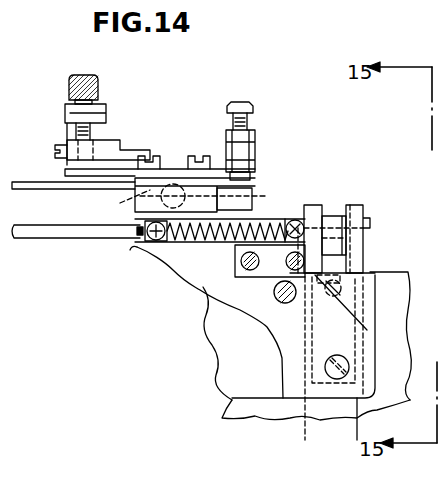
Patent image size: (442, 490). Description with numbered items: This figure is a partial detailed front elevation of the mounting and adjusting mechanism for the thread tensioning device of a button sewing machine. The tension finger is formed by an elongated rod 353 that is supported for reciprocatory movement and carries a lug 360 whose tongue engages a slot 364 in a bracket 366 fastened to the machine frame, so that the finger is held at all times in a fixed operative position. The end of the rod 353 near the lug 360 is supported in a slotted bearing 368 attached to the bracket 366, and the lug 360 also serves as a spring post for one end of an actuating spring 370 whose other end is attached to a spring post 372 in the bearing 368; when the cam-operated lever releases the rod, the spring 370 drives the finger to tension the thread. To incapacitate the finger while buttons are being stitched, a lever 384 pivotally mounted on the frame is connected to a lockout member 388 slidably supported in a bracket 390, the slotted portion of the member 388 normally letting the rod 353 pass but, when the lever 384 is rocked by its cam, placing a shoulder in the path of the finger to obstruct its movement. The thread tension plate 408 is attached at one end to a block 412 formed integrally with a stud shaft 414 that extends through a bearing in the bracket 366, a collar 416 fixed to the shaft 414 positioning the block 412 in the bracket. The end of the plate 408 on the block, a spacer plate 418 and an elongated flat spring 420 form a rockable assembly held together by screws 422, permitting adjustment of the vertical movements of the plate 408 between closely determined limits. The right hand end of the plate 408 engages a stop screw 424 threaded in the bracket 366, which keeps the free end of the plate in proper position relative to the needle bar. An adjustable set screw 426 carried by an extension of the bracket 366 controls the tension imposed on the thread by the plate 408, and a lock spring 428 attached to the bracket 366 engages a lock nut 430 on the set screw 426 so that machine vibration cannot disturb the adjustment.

The rod 353 is at (67, 233).
The lug 360 is at (136, 258).
The slot 364 is at (143, 242).
The bracket 366 is at (180, 258).
The slotted bearing 368 is at (268, 264).
The actuating spring 370 is at (267, 217).
The spring post 372 is at (304, 216).
The lever 384 is at (323, 428).
The lockout member 388 is at (332, 218).
The bracket 390 is at (355, 222).
The tension plate 408 is at (62, 187).
The block 412 is at (133, 193).
The stud shaft 414 is at (133, 218).
The collar 416 is at (238, 200).
The spacer plate 418 is at (170, 178).
The elongated flat spring 420 is at (68, 172).
The screws 422 is at (145, 158).
The stop screw 424 is at (253, 91).
The adjustable set screw 426 is at (67, 140).
The lock spring 428 is at (66, 121).
The lock nut 430 is at (88, 114).